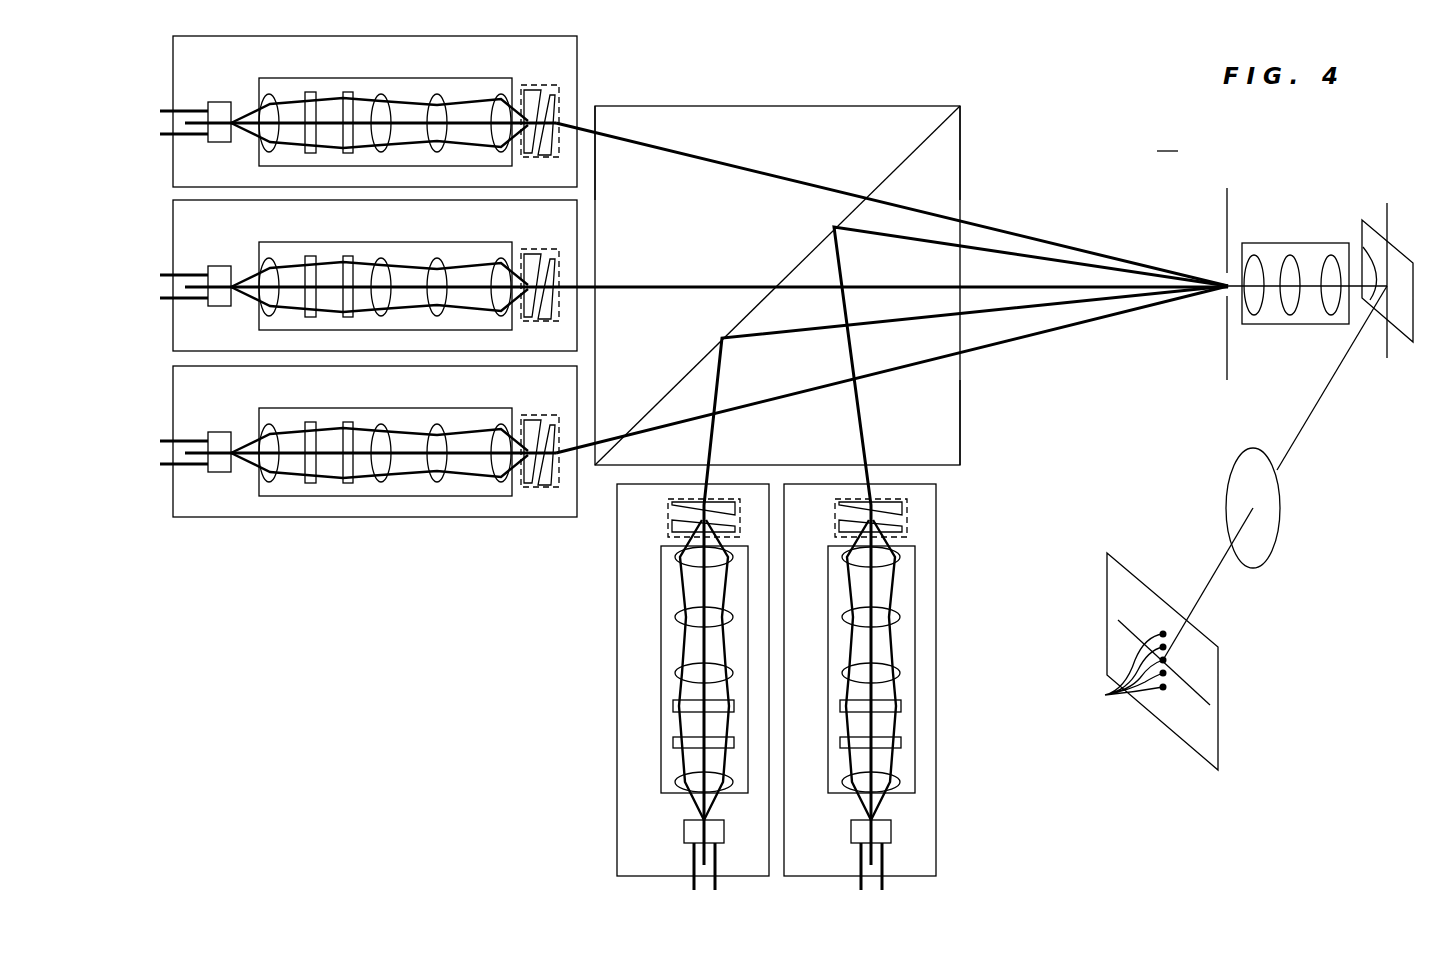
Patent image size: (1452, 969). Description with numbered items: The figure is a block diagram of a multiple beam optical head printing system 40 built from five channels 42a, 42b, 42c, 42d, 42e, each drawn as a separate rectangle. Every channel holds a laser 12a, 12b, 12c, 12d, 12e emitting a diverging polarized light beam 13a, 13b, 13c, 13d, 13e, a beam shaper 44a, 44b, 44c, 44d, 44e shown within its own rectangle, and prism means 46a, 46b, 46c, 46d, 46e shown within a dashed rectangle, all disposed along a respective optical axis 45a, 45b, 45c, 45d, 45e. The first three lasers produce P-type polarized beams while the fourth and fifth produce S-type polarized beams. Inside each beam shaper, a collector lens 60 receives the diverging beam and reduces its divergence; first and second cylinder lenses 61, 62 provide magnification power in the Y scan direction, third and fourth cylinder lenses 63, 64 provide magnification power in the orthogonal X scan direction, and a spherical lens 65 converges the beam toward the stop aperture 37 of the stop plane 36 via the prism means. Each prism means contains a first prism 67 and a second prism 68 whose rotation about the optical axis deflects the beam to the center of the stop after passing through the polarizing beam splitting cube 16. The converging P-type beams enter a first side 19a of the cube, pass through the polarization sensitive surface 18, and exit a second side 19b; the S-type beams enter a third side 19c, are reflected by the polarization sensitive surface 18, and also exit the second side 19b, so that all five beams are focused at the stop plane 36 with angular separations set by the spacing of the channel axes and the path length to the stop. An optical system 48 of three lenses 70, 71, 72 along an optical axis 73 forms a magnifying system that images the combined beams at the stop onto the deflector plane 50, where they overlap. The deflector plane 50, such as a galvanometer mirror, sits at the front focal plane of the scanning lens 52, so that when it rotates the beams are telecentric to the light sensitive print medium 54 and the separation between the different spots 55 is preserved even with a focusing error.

The laser 12a is at (213, 103).
The laser 12b is at (213, 267).
The laser 12c is at (213, 433).
The laser 12d is at (684, 838).
The laser 12e is at (851, 838).
The polarized light beam 13a is at (247, 112).
The polarized light beam 13b is at (247, 276).
The polarized light beam 13c is at (247, 442).
The polarized light beam 13d is at (692, 808).
The polarized light beam 13e is at (859, 808).
The polarizing beam splitting cube 16 is at (792, 106).
The polarization sensitive surface 18 is at (925, 140).
The first side 19a is at (595, 116).
The second side 19b is at (960, 170).
The third side 19c is at (958, 465).
The stop plane 36 is at (1226, 202).
The stop aperture 37 is at (1226, 296).
The multiple beam optical head printing system 40 is at (1167, 140).
The first channel 42a is at (173, 81).
The second channel 42b is at (173, 245).
The third channel 42c is at (173, 411).
The fourth channel 42d is at (617, 766).
The fifth channel 42e is at (936, 736).
The beam shaper 44a is at (396, 78).
The beam shaper 44b is at (396, 242).
The beam shaper 44c is at (396, 408).
The beam shaper 44d is at (661, 654).
The beam shaper 44e is at (828, 654).
The optical axis 45a is at (221, 142).
The optical axis 45b is at (221, 306).
The optical axis 45c is at (221, 472).
The optical axis 45d is at (700, 580).
The optical axis 45e is at (876, 640).
The prism means 46a is at (528, 85).
The prism means 46b is at (528, 249).
The prism means 46c is at (528, 415).
The prism means 46d is at (668, 534).
The prism means 46e is at (835, 534).
The optical system 48 is at (1287, 243).
The deflector plane 50 is at (1400, 243).
The scanning lens 52 is at (1270, 540).
The light sensitive print medium 54 is at (1219, 690).
The spots 55 is at (1105, 695).
The collector lens 60 is at (270, 94).
The first cylinder lens 61 is at (310, 92).
The second cylinder lens 62 is at (348, 92).
The third cylinder lens 63 is at (381, 94).
The fourth cylinder lens 64 is at (439, 95).
The spherical lens 65 is at (501, 95).
The first prism 67 is at (530, 150).
The second prism 68 is at (551, 100).
The lens 70 is at (1254, 258).
The lens 71 is at (1290, 305).
The lens 72 is at (1330, 305).
The optical axis 73 is at (1366, 256).